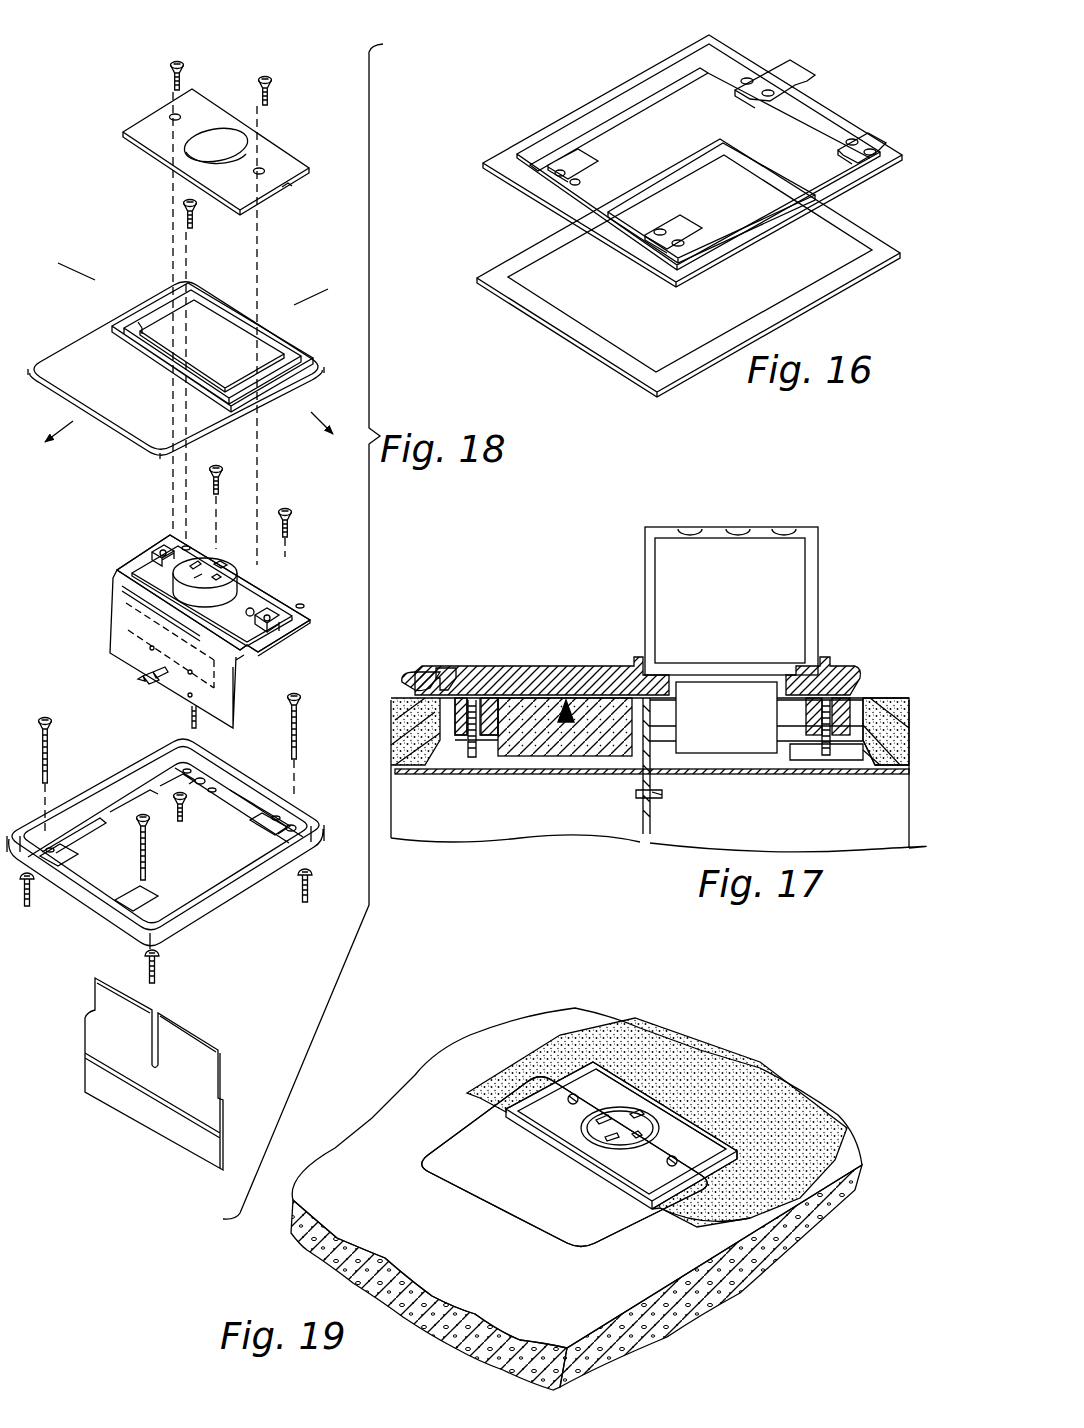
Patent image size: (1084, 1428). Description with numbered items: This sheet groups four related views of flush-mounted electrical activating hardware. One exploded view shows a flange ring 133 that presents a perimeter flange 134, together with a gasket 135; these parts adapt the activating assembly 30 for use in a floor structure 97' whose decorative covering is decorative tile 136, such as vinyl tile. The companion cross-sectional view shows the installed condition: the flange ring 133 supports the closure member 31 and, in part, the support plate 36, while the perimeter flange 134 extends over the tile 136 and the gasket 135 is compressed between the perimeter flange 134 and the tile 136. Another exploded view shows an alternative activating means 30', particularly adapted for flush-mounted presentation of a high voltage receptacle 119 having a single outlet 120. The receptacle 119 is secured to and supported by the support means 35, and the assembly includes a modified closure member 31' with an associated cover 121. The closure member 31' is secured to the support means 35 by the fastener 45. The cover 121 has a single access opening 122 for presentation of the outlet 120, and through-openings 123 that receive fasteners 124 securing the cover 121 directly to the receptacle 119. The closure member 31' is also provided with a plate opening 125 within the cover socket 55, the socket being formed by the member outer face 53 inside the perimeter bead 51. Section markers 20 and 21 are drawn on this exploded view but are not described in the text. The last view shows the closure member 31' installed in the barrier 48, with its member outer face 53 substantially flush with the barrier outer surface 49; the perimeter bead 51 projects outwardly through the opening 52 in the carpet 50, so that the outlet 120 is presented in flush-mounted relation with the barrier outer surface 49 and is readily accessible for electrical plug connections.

In FIG. 18, the activating means 30' is at (206, 232).
In FIG. 18, the cover 121 is at (120, 131).
In FIG. 19, the cover 121 is at (548, 1096).
In FIG. 18, the access opening 122 is at (198, 150).
In FIG. 18, the through-openings 123 is at (173, 114).
In FIG. 18, the fasteners 124 is at (263, 76).
In FIG. 18, the fastener 45 is at (182, 212).
In FIG. 18, the closure member 31 is at (176, 370).
In FIG. 17, the closure member 31 is at (637, 659).
In FIG. 18, the plate opening 125 is at (218, 340).
In FIG. 18, the cover socket 55 is at (142, 326).
In FIG. 18, the section line 21 is at (174, 361).
In FIG. 18, the section line 20 is at (196, 386).
In FIG. 18, the support means 35 is at (117, 573).
In FIG. 18, the high voltage receptacle 119 is at (265, 605).
In FIG. 18, the outlet 120 is at (172, 586).
In FIG. 19, the outlet 120 is at (590, 1134).
In FIG. 16, the flange ring 133 is at (800, 82).
In FIG. 16, the perimeter flange 134 is at (610, 98).
In FIG. 17, the perimeter flange 134 is at (444, 671).
In FIG. 16, the gasket 135 is at (800, 298).
In FIG. 17, the gasket 135 is at (414, 680).
In FIG. 17, the activating assembly 30 is at (766, 590).
In FIG. 17, the decorative tile 136 is at (906, 697).
In FIG. 17, the support plate 36 is at (800, 700).
In FIG. 17, the floor structure 97' is at (658, 792).
In FIG. 19, the barrier 48 is at (350, 1285).
In FIG. 19, the barrier outer surface 49 is at (569, 1308).
In FIG. 19, the member outer face 53 is at (531, 1203).
In FIG. 19, the modified closure member 31' is at (521, 1154).
In FIG. 19, the carpet 50 is at (720, 1056).
In FIG. 19, the opening 52 is at (665, 1210).
In FIG. 19, the perimeter bead 51 is at (622, 1058).